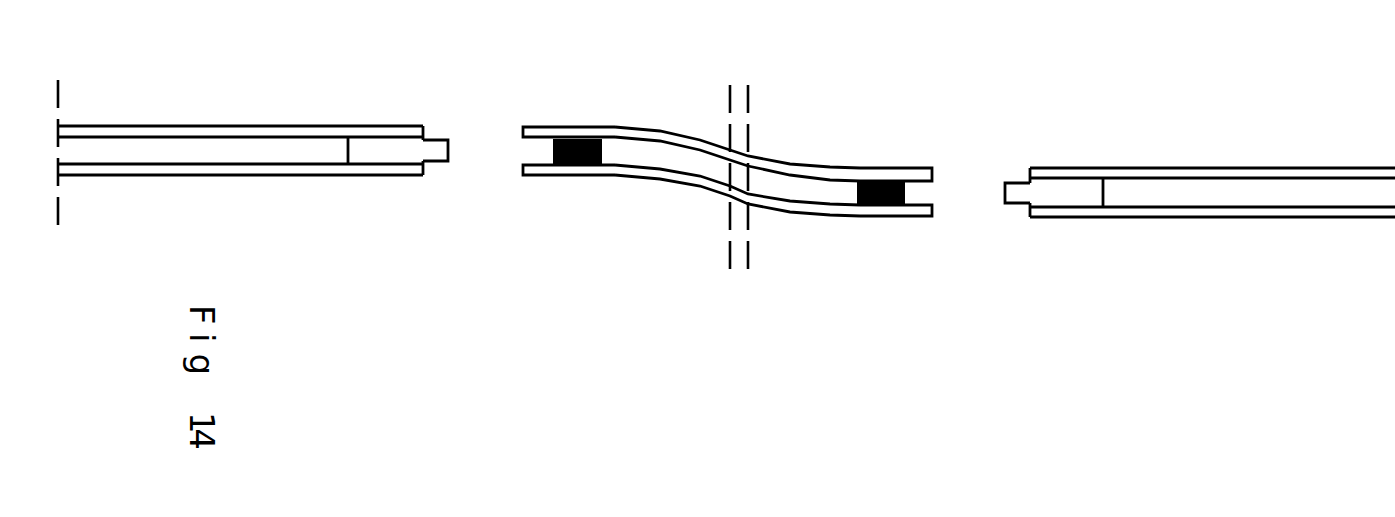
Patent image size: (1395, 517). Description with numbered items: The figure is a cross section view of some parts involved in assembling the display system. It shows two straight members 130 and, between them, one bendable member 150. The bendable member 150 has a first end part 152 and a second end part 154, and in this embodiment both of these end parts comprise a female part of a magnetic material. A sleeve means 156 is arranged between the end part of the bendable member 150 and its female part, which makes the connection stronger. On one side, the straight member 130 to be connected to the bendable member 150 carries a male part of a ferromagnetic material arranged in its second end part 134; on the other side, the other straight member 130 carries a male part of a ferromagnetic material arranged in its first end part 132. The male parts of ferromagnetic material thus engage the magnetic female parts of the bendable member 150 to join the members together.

The straight member 130 is at (218, 120).
The first end part 132 is at (392, 124).
The second end part 134 is at (1068, 167).
The bendable member 150 is at (712, 194).
The first end part 152 is at (574, 124).
The second end part 154 is at (890, 166).
The sleeve means 156 is at (524, 164).